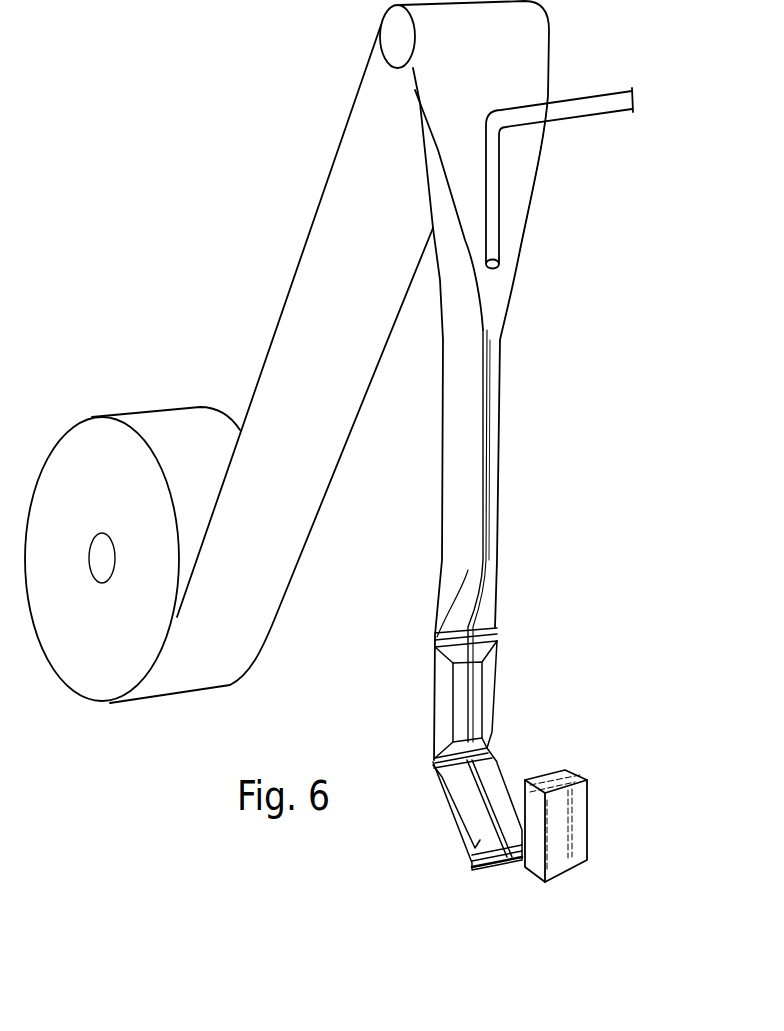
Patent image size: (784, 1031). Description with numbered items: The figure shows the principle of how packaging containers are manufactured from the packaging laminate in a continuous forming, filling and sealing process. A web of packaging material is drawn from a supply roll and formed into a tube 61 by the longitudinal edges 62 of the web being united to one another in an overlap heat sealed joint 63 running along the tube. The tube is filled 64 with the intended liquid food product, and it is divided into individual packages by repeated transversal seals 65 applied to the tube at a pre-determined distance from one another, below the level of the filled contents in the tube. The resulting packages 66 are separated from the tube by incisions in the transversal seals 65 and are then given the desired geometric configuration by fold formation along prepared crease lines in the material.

The tube 61 is at (465, 432).
The longitudinal edges 62 is at (457, 202).
The overlap heat sealed joint 63 is at (483, 372).
The filling 64 is at (588, 108).
The transversal seals 65 is at (485, 635).
The packages 66 is at (578, 824).